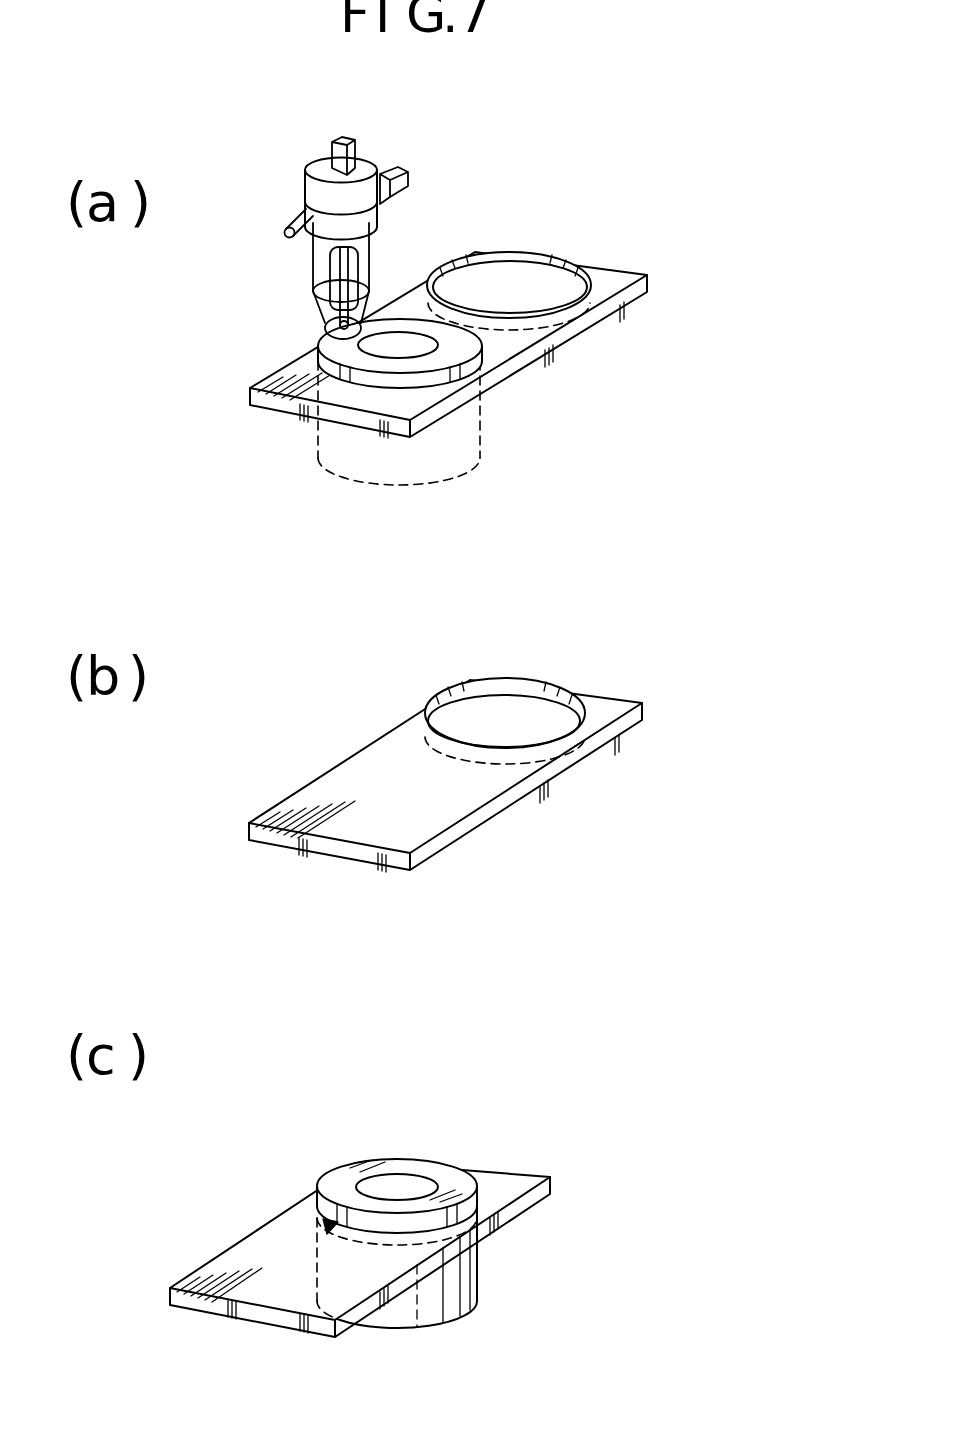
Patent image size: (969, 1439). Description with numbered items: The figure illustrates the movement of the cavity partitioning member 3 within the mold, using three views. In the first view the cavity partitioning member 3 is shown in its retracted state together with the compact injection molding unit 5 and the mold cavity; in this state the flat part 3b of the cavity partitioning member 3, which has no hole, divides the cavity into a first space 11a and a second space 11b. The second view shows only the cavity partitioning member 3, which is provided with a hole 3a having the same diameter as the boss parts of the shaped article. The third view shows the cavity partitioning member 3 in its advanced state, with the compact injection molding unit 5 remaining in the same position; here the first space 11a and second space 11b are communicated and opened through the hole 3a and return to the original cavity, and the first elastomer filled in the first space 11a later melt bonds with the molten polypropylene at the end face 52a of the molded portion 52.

The cavity partitioning member 3 is at (603, 283).
The hole 3a is at (517, 292).
The flat part 3b is at (375, 792).
The compact injection molding unit 5 is at (320, 165).
The first space 11a is at (453, 346).
The second space 11b is at (453, 457).
The adhesive 52 is at (427, 1163).
The end face 52a is at (325, 1226).